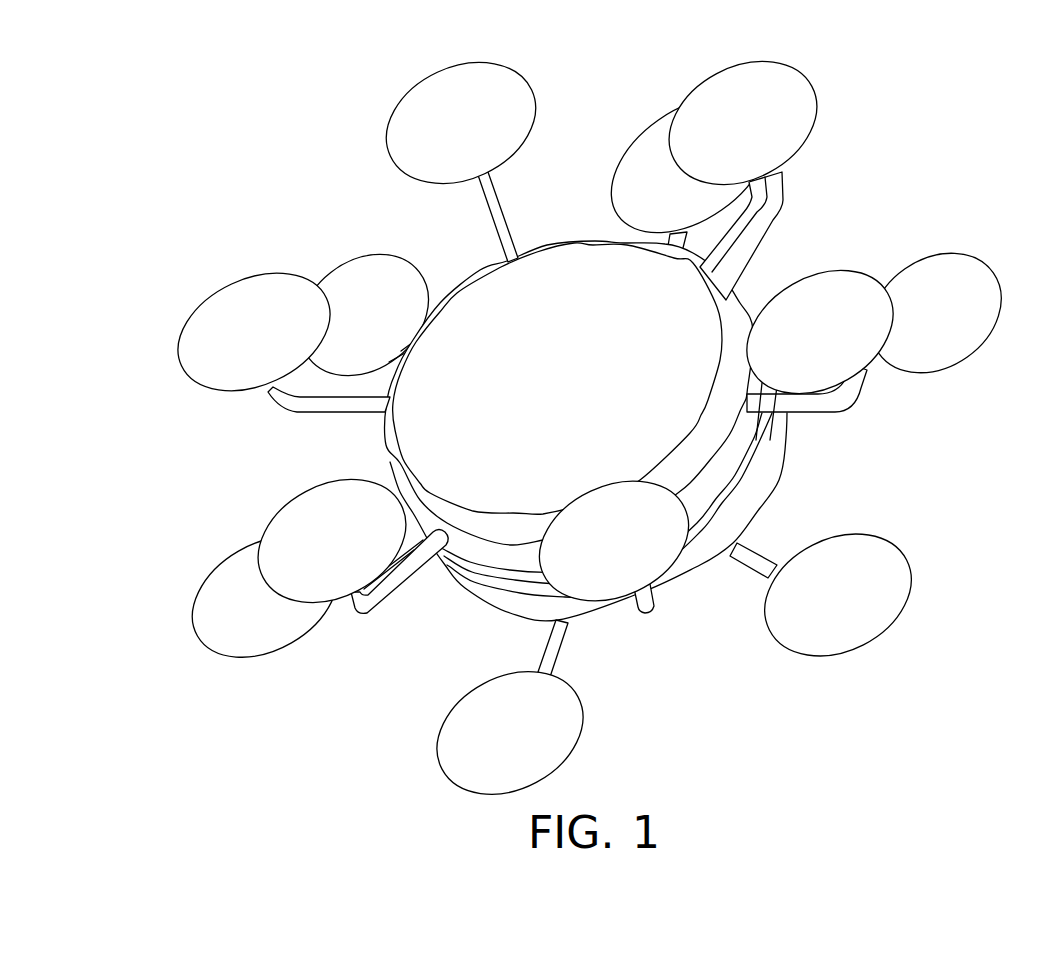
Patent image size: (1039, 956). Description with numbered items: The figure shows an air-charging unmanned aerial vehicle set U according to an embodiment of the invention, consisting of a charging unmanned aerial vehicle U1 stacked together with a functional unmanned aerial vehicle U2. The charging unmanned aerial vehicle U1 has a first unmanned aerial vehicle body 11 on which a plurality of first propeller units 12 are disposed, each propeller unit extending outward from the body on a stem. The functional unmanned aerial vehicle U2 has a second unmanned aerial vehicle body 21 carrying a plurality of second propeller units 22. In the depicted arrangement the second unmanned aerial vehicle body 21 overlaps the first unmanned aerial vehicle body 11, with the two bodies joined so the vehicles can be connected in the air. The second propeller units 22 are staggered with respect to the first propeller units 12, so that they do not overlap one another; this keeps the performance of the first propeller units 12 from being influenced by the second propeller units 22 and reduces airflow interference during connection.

The air-charging unmanned aerial vehicle set U is at (533, 428).
The charging unmanned aerial vehicle U1 is at (641, 429).
The functional unmanned aerial vehicle U2 is at (661, 558).
The first unmanned aerial vehicle body 11 is at (477, 528).
The first propeller units 12 is at (842, 298).
The second unmanned aerial vehicle body 21 is at (680, 577).
The second propeller units 22 is at (863, 617).